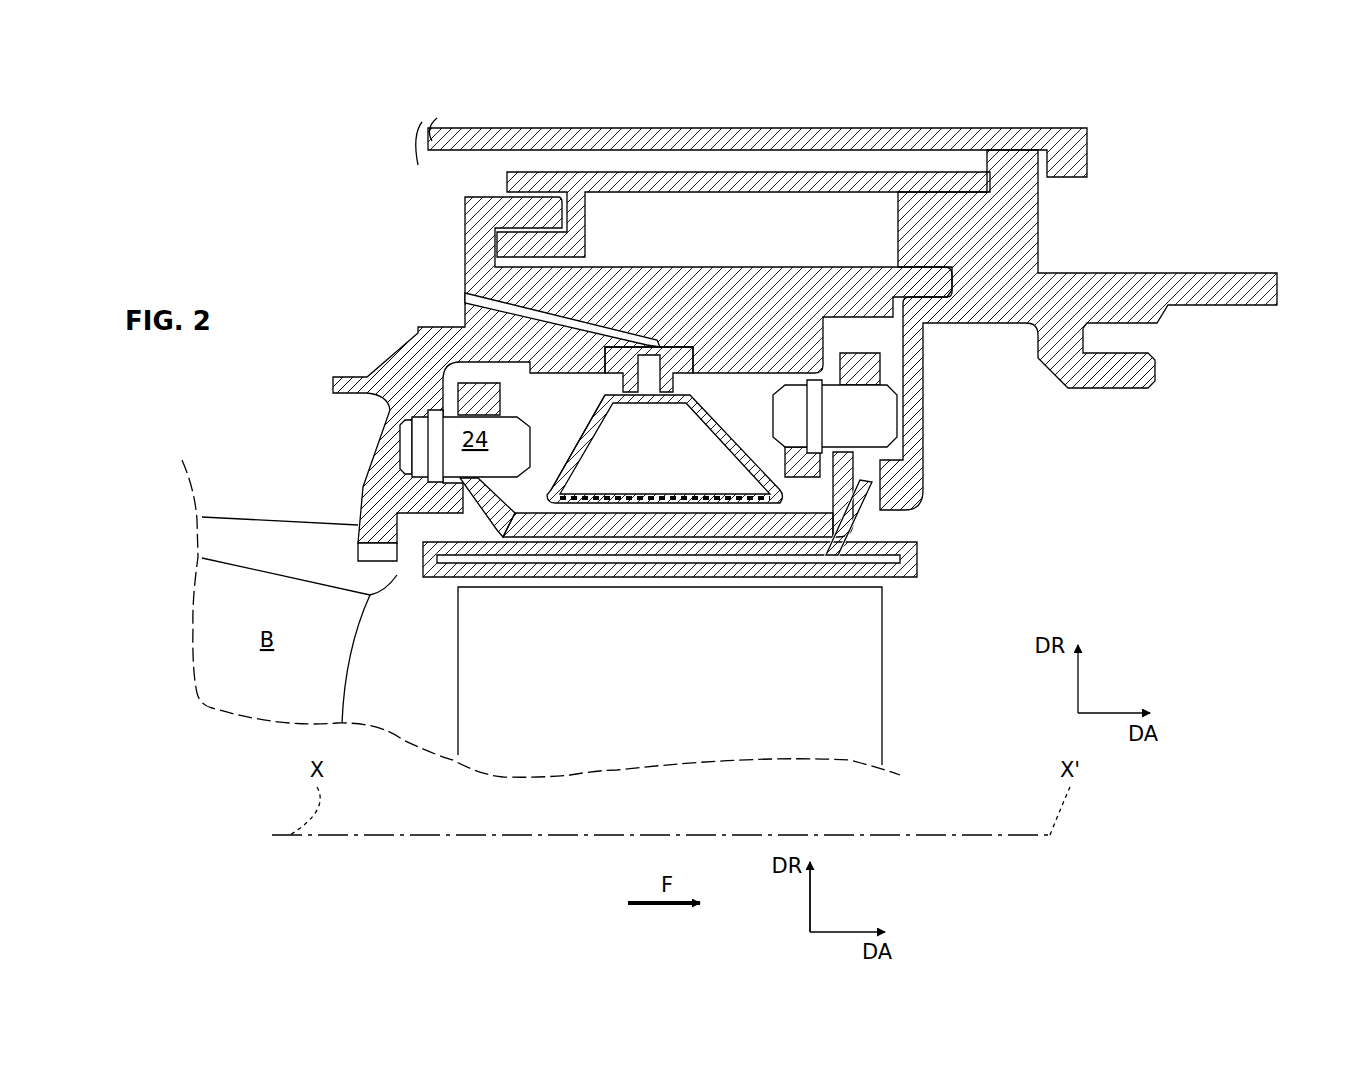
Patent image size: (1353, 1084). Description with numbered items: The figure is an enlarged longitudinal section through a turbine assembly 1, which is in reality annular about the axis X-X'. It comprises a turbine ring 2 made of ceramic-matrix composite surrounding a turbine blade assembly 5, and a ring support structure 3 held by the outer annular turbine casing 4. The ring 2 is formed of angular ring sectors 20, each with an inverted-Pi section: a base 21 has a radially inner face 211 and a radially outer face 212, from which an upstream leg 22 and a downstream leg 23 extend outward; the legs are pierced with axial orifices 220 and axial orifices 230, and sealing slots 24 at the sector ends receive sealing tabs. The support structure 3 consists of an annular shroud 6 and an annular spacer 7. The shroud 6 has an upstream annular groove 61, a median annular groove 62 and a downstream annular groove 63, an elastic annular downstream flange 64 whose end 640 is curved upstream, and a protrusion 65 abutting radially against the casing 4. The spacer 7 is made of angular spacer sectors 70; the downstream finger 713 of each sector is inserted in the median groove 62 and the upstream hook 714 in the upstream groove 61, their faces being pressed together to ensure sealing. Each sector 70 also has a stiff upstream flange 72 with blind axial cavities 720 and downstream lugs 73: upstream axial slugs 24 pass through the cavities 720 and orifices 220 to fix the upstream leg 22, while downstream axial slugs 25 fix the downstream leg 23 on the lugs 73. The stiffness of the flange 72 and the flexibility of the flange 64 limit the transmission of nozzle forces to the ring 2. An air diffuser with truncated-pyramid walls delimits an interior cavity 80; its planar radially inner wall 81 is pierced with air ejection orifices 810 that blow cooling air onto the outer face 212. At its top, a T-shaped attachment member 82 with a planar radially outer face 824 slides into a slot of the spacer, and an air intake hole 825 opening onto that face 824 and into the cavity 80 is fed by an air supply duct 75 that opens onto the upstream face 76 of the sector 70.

The turbine assembly 1 is at (344, 107).
The turbine ring 2 is at (903, 590).
The ring support structure 3 is at (853, 84).
The outer annular turbine casing 4 is at (637, 128).
The turbine blade assembly 5 is at (670, 676).
The annular shroud 6 is at (698, 170).
The annular spacer 7 is at (778, 264).
The angular ring sector 20 is at (646, 544).
The base 21 is at (787, 550).
The upstream leg 22 is at (480, 398).
The downstream leg 23 is at (866, 372).
The sealing slots / upstream axial slugs 24 is at (874, 522).
The downstream axial slugs 25 is at (835, 416).
The upstream annular groove 61 is at (540, 232).
The median annular groove 62 is at (927, 318).
The downstream annular groove 63 is at (1103, 388).
The annular downstream flange 64 is at (916, 426).
The protrusion 65 is at (1012, 167).
The angular spacer sector 70 is at (642, 370).
The upstream flange 72 is at (418, 370).
The downstream lugs 73 is at (780, 432).
The air supply duct 75 is at (575, 300).
The upstream face 76 is at (464, 238).
The interior cavity 80 is at (665, 449).
The radially inner wall 81 is at (548, 487).
The attachment member 82 is at (622, 358).
The radially inner face 211 is at (749, 580).
The radially outer face 212 is at (627, 506).
The axial orifices 220 is at (477, 490).
The axial orifices 230 is at (860, 455).
The end 640 is at (893, 508).
The downstream finger 713 is at (921, 268).
The upstream hook 714 is at (547, 238).
The blind axial cavities 720 is at (399, 445).
The air ejection orifices 810 is at (681, 500).
The radially outer face 824 is at (669, 340).
The air intake hole 825 is at (652, 377).